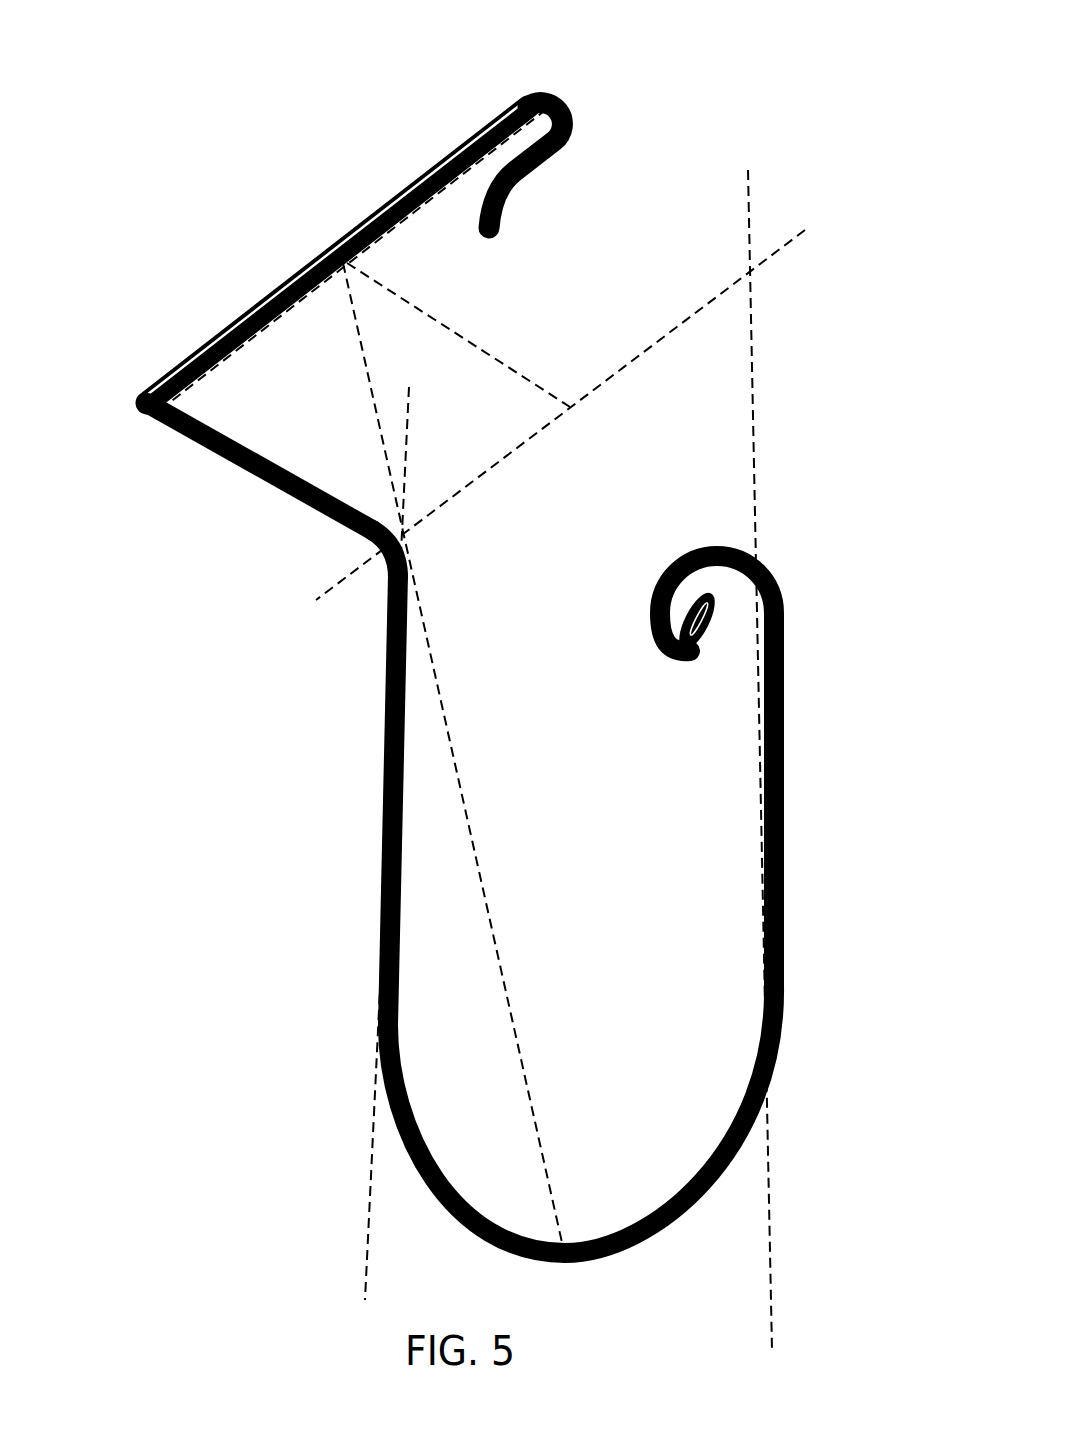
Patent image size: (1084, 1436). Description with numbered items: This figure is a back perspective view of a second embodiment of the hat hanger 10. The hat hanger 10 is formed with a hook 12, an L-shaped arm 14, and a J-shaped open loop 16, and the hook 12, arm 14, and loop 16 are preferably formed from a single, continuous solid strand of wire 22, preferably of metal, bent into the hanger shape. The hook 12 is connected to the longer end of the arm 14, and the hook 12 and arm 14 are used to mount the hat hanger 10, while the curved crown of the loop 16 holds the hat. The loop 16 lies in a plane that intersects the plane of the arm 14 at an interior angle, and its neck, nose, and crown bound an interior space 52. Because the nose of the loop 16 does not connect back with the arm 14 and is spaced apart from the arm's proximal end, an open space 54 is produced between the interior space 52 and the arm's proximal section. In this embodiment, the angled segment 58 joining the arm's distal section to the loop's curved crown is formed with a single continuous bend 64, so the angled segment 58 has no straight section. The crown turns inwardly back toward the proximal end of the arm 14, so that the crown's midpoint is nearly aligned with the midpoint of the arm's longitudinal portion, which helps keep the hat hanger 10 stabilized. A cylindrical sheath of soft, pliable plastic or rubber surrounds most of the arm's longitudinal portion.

The hat hanger 10 is at (499, 676).
The hook 12 is at (553, 93).
The L-shaped arm 14 is at (245, 300).
The J-shaped open loop 16 is at (393, 1127).
The wire 22 is at (784, 853).
The interior space 52 is at (587, 882).
The open space 54 is at (570, 478).
The angled segment 58 is at (390, 553).
The single continuous bend 64 is at (385, 548).